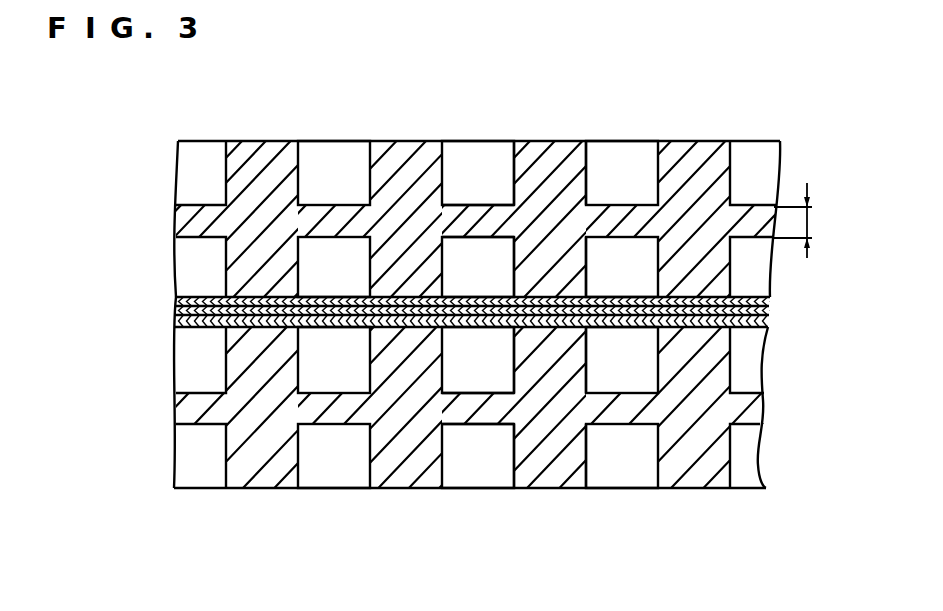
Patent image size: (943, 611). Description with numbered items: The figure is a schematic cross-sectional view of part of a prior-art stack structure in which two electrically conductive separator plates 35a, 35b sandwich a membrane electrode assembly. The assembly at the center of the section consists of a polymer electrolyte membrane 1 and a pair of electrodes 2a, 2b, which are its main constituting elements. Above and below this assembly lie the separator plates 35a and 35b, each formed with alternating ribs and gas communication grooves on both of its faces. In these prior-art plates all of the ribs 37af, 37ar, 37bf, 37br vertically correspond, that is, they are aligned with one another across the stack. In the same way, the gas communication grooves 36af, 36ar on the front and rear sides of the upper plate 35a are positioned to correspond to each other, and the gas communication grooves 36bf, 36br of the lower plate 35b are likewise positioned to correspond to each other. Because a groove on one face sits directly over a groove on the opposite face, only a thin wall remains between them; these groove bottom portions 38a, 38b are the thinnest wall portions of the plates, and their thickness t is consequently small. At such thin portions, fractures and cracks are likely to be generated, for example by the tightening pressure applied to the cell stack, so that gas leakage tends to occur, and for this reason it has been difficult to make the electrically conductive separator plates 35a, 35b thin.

The polymer electrolyte membrane 1 is at (173, 313).
The electrode 2a is at (173, 304).
The electrode 2b is at (173, 322).
The electrically conductive separator plate 35a is at (172, 218).
The electrically conductive separator plate 35b is at (168, 407).
The gas communication groove 36af is at (490, 163).
The gas communication groove 36ar is at (460, 262).
The gas communication groove 36bf is at (462, 360).
The gas communication groove 36br is at (495, 470).
The rib 37af is at (553, 163).
The rib 37ar is at (555, 267).
The rib 37bf is at (568, 343).
The rib 37br is at (563, 467).
The groove bottom portion 38a is at (475, 225).
The groove bottom portion 38b is at (478, 418).
The thickness of groove bottom portions t is at (800, 220).